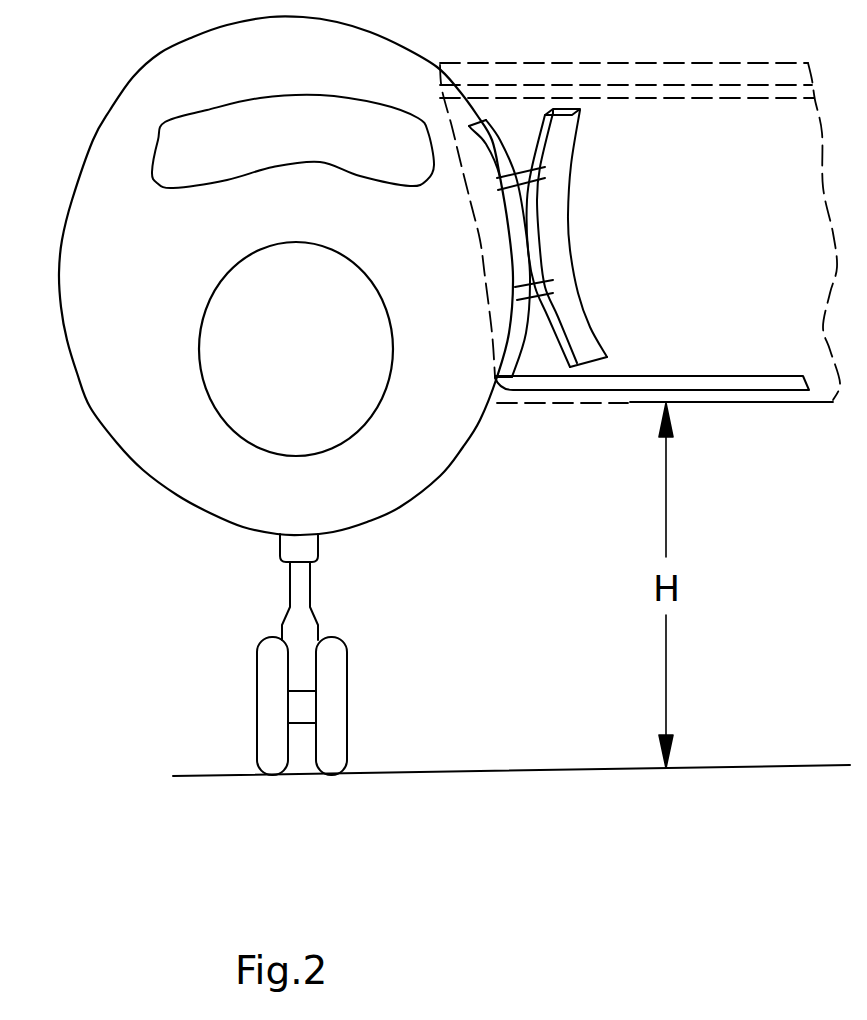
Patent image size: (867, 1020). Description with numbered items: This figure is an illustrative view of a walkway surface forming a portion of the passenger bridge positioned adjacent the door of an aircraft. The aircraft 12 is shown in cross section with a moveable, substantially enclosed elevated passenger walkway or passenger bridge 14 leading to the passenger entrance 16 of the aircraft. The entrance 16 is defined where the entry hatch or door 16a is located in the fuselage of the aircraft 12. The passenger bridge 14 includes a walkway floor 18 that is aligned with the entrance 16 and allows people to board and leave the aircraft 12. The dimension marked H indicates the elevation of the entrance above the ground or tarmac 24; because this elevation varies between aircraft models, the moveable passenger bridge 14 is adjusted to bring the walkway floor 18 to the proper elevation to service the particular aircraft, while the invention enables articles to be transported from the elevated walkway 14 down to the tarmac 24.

The aircraft 12 is at (118, 440).
The passenger walkway/passenger bridge 14 is at (725, 143).
The passenger entrance 16 is at (497, 380).
The entry hatch/door 16a is at (553, 245).
The walkway floor 18 is at (752, 393).
The ground/tarmac 24 is at (661, 823).